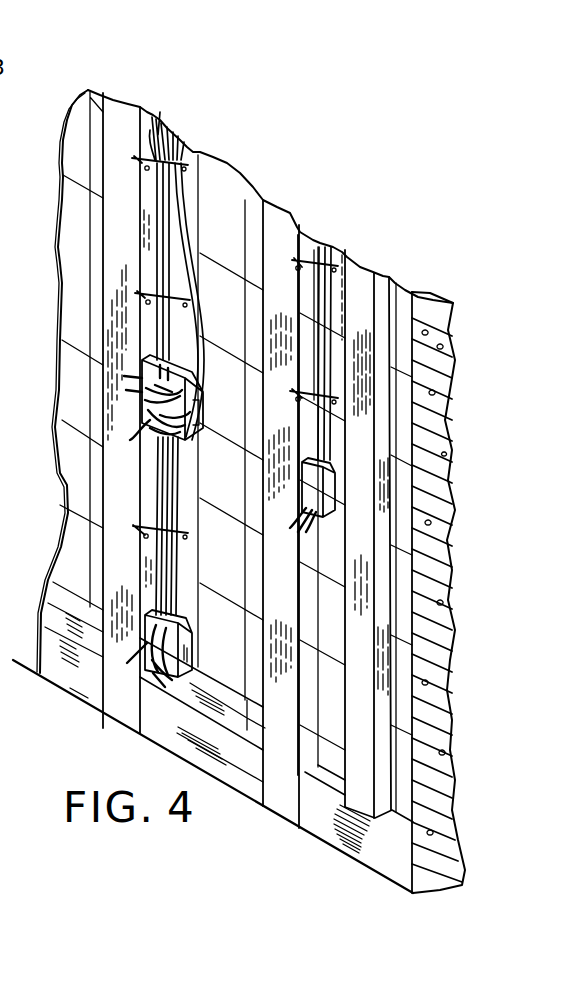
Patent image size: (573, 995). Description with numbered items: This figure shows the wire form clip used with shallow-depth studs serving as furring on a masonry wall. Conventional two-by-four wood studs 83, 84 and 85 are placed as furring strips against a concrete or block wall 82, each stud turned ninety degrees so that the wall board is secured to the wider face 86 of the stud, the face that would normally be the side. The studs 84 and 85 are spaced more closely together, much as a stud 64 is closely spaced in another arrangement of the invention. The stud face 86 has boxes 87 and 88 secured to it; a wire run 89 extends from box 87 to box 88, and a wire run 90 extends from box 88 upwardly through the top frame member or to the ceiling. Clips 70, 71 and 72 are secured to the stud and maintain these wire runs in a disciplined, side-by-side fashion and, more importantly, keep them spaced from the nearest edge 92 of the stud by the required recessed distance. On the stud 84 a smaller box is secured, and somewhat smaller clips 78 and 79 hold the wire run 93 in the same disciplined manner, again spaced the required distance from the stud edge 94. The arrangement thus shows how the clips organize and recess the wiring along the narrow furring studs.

The stud 64 is at (0, 183).
The wire form clip 70 is at (152, 163).
The wire form clip 71 is at (147, 305).
The wire form clip 72 is at (140, 527).
The smaller clip 78 is at (300, 268).
The smaller clip 79 is at (314, 400).
The concrete or block wall 82 is at (453, 340).
The stud 83 is at (122, 117).
The stud 84 is at (283, 213).
The stud 85 is at (358, 277).
The wider face of the stud 86 is at (120, 487).
The box 87 is at (190, 647).
The box 88 is at (205, 403).
The wire run 89 is at (177, 552).
The wire run 90 is at (185, 232).
The nearest edge of the stud 92 is at (150, 243).
The wire run 93 is at (338, 312).
The edge of the stud 94 is at (312, 338).